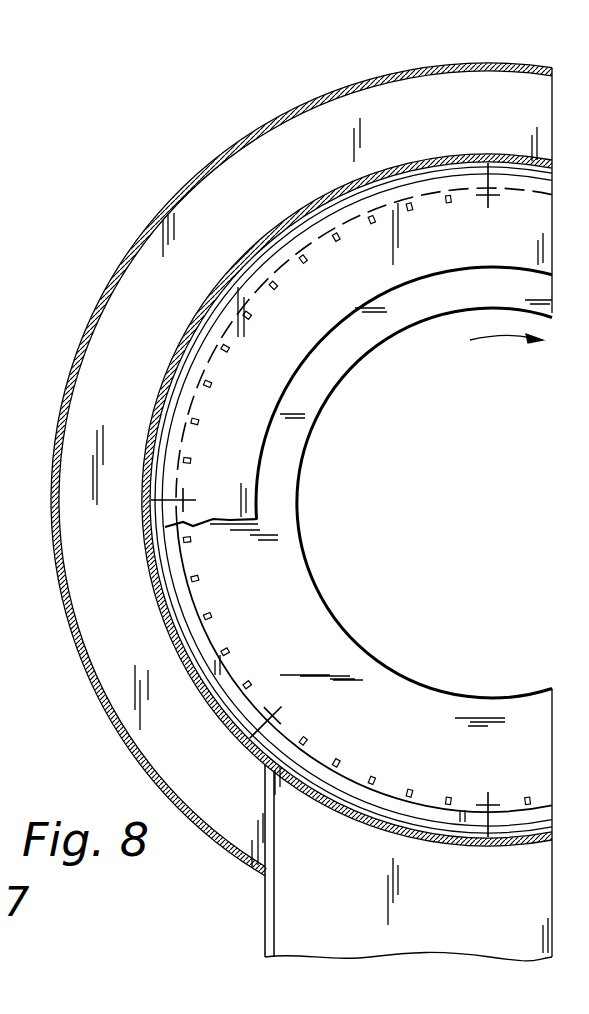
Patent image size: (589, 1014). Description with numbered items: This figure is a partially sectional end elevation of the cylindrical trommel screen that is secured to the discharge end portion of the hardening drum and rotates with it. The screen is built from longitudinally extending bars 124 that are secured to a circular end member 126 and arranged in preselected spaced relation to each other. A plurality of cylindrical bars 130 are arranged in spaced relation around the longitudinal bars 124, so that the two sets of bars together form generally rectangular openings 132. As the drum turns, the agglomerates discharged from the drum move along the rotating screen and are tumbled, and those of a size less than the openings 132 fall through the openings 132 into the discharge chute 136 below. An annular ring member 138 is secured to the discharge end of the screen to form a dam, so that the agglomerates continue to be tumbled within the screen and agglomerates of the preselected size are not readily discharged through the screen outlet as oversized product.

The longitudinally extending bars 124 is at (200, 582).
The circular end member 126 is at (338, 383).
The cylindrical bars 130 is at (227, 673).
The openings 132 is at (327, 755).
The discharge chute 136 is at (491, 895).
The annular ring member 138 is at (250, 477).